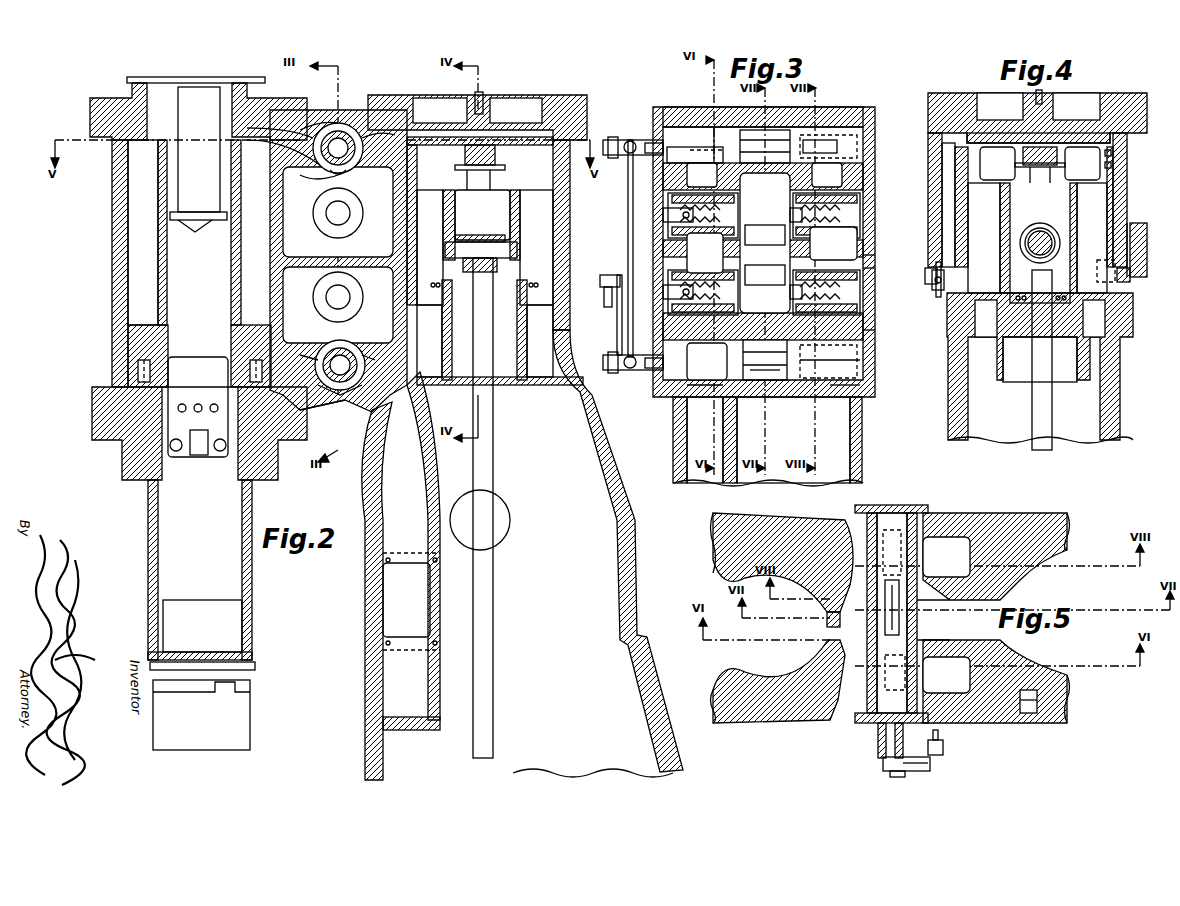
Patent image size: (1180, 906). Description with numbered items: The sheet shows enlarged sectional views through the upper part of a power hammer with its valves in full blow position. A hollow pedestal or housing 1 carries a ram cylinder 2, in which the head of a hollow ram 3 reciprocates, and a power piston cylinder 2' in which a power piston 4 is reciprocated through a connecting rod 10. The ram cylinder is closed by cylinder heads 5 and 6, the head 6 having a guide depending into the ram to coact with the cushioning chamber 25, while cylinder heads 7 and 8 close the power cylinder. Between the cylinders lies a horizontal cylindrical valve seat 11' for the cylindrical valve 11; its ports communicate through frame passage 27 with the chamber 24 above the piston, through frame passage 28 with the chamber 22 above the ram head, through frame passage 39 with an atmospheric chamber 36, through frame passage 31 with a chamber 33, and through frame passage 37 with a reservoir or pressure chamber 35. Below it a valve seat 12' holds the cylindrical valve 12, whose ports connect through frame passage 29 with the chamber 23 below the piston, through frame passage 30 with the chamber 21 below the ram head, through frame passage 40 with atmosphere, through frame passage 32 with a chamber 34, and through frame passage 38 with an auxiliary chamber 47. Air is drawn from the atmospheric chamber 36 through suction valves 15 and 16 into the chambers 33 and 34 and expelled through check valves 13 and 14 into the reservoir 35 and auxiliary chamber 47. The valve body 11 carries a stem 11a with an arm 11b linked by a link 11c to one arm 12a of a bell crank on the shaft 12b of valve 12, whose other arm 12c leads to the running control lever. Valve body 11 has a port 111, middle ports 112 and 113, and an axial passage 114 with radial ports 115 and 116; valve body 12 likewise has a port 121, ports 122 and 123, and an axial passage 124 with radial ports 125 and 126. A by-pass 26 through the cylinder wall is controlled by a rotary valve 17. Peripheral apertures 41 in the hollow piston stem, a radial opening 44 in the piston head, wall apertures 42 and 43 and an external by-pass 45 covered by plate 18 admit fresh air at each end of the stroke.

In FIG. 2, the pedestal or housing 1 is at (628, 560).
In FIG. 2, the ram cylinder 2 is at (100, 263).
In FIG. 5, the ram cylinder 2 is at (890, 628).
In FIG. 2, the power piston cylinder 2' is at (506, 235).
In FIG. 3, the power piston cylinder 2' is at (931, 387).
In FIG. 4, the power piston cylinder 2' is at (1025, 368).
In FIG. 2, the hollow ram 3 is at (150, 528).
In FIG. 2, the power piston 4 is at (540, 190).
In FIG. 4, the power piston 4 is at (1110, 188).
In FIG. 2, the cylinder head 5 is at (122, 460).
In FIG. 2, the cylinder head 6 is at (123, 117).
In FIG. 2, the cylinder head 7 is at (572, 98).
In FIG. 4, the cylinder head 7 is at (955, 95).
In FIG. 2, the cylinder head 8 is at (525, 385).
In FIG. 4, the cylinder head 8 is at (1085, 382).
In FIG. 2, the connecting rod 10 is at (493, 602).
In FIG. 4, the connecting rod 10 is at (1045, 423).
In FIG. 2, the cylindrical valve 11 is at (319, 161).
In FIG. 3, the cylindrical valve 11 is at (707, 141).
In FIG. 5, the cylindrical valve 11 is at (892, 666).
In FIG. 2, the valve seat 11' is at (341, 109).
In FIG. 3, the valve seat 11' is at (726, 122).
In FIG. 5, the valve seat 11' is at (871, 606).
In FIG. 3, the stub shaft or stem 11a is at (655, 140).
In FIG. 3, the arm 11b is at (615, 140).
In FIG. 3, the link 11c is at (628, 245).
In FIG. 2, the cylindrical valve 12 is at (356, 398).
In FIG. 3, the cylindrical valve 12 is at (715, 361).
In FIG. 2, the valve seat 12' is at (321, 428).
In FIG. 3, the valve seat 12' is at (765, 398).
In FIG. 3, the bell crank arm 12a is at (622, 372).
In FIG. 3, the shaft 12b is at (655, 372).
In FIG. 3, the bell crank arm 12c is at (620, 305).
In FIG. 2, the check valve 13 is at (352, 222).
In FIG. 3, the check valve 13 is at (800, 217).
In FIG. 2, the check valve 14 is at (352, 298).
In FIG. 3, the check valve 14 is at (800, 293).
In FIG. 3, the suction valve 15 is at (725, 217).
In FIG. 3, the suction valve 16 is at (725, 293).
In FIG. 3, the rotary valve 17 is at (930, 270).
In FIG. 4, the plate 18 is at (1140, 230).
In FIG. 2, the chamber 21 is at (135, 356).
In FIG. 2, the chamber 22 is at (195, 232).
In FIG. 2, the chamber 23 is at (429, 247).
In FIG. 4, the chamber 23 is at (984, 238).
In FIG. 2, the chamber 24 is at (510, 136).
In FIG. 4, the chamber 24 is at (998, 133).
In FIG. 2, the cushioning chamber 25 is at (202, 626).
In FIG. 3, the by-pass 26 is at (940, 197).
In FIG. 4, the by-pass 26 is at (945, 200).
In FIG. 5, the by-pass 26 is at (1030, 692).
In FIG. 2, the frame passage 27 is at (380, 115).
In FIG. 5, the frame passage 27 is at (933, 620).
In FIG. 2, the frame passage 28 is at (300, 143).
In FIG. 5, the frame passage 28 is at (843, 612).
In FIG. 2, the frame passage 29 is at (379, 352).
In FIG. 2, the frame passage 30 is at (320, 372).
In FIG. 2, the frame passage 31 is at (350, 175).
In FIG. 3, the frame passage 31 is at (765, 243).
In FIG. 2, the frame passage 32 is at (325, 345).
In FIG. 3, the frame passage 32 is at (760, 340).
In FIG. 2, the chamber 33 is at (338, 212).
In FIG. 3, the chamber 33 is at (765, 235).
In FIG. 2, the chamber 34 is at (338, 305).
In FIG. 3, the chamber 34 is at (765, 275).
In FIG. 2, the reservoir or pressure chamber 35 is at (401, 576).
In FIG. 3, the reservoir or pressure chamber 35 is at (858, 232).
In FIG. 5, the reservoir or pressure chamber 35 is at (946, 557).
In FIG. 3, the atmospheric chamber 36 is at (705, 358).
In FIG. 5, the atmospheric chamber 36 is at (946, 675).
In FIG. 3, the frame passage 37 is at (818, 170).
In FIG. 3, the frame passage 38 is at (860, 365).
In FIG. 3, the frame passage 39 is at (703, 175).
In FIG. 3, the frame passage 40 is at (700, 398).
In FIG. 4, the peripheral apertures 41 is at (1020, 300).
In FIG. 4, the aperture 42 is at (1130, 280).
In FIG. 4, the aperture 43 is at (1110, 245).
In FIG. 4, the radial opening 44 is at (1112, 160).
In FIG. 4, the external by-pass 45 is at (1135, 252).
In FIG. 3, the auxiliary chamber 47 is at (860, 262).
In FIG. 3, the port 111 is at (695, 147).
In FIG. 5, the port 111 is at (865, 720).
In FIG. 3, the port 112 is at (820, 112).
In FIG. 3, the port 113 is at (755, 140).
In FIG. 3, the axial passage 114 is at (870, 112).
In FIG. 3, the radial port 115 is at (848, 135).
In FIG. 5, the radial port 115 is at (890, 548).
In FIG. 3, the radial port 116 is at (840, 155).
In FIG. 5, the radial port 116 is at (915, 515).
In FIG. 3, the port 121 is at (735, 450).
In FIG. 3, the port 122 is at (815, 380).
In FIG. 3, the port 123 is at (778, 370).
In FIG. 3, the axial passage 124 is at (870, 335).
In FIG. 3, the radial port 125 is at (860, 430).
In FIG. 3, the radial port 126 is at (850, 385).